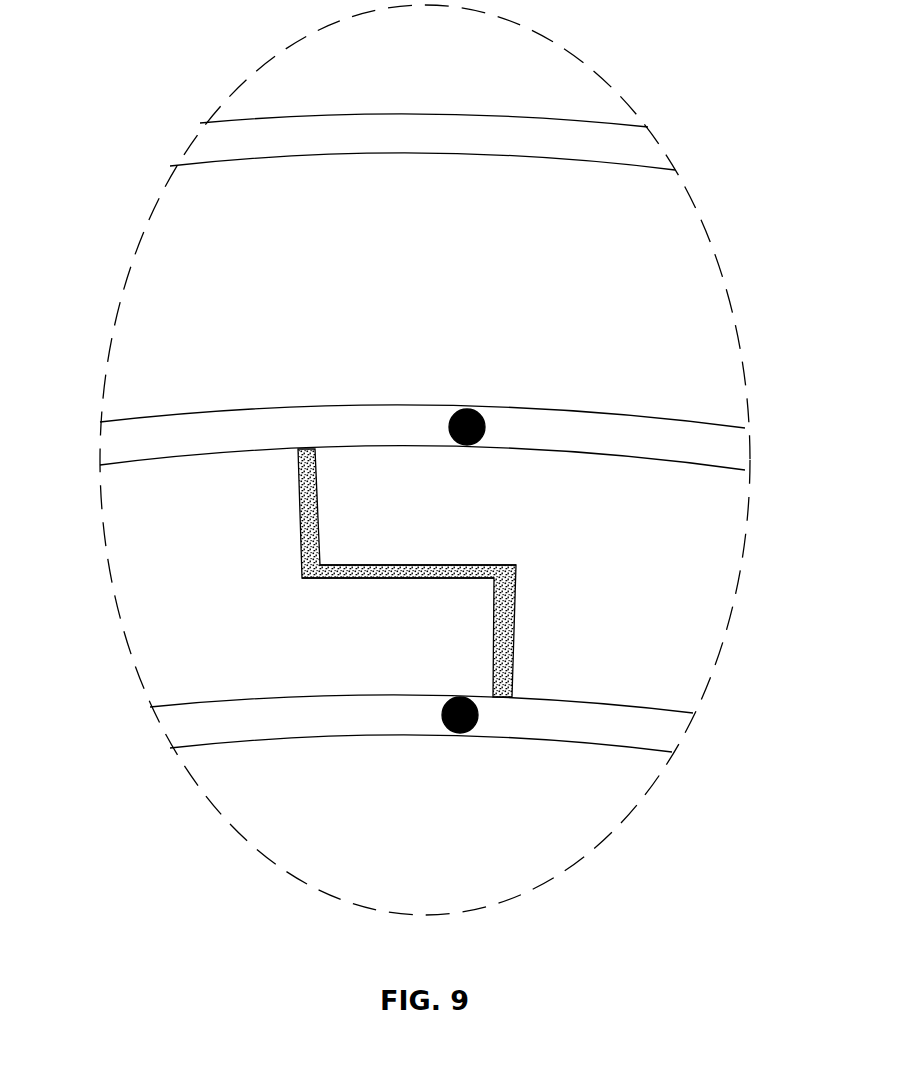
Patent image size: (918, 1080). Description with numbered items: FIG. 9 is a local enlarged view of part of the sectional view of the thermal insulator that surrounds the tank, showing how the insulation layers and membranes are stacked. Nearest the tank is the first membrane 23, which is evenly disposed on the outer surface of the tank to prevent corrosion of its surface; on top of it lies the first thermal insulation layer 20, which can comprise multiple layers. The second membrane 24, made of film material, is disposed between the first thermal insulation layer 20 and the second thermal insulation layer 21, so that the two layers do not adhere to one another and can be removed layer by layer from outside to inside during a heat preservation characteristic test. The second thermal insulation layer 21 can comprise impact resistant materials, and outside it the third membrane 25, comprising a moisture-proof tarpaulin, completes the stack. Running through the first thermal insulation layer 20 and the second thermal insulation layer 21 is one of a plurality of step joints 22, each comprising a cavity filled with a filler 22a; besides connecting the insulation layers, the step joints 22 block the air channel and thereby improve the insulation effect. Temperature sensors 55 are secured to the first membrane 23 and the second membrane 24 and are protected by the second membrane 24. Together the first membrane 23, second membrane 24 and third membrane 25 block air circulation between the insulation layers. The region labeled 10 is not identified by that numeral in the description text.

The display panel 10 is at (300, 806).
The first thermal insulation layer 20 is at (200, 661).
The second thermal insulation layer 21 is at (230, 285).
The step joint 22 is at (297, 500).
The filler 22a is at (300, 543).
The first membrane 23 is at (622, 724).
The second membrane 24 is at (690, 445).
The third membrane 25 is at (600, 148).
The temperature sensor 55 is at (487, 420).